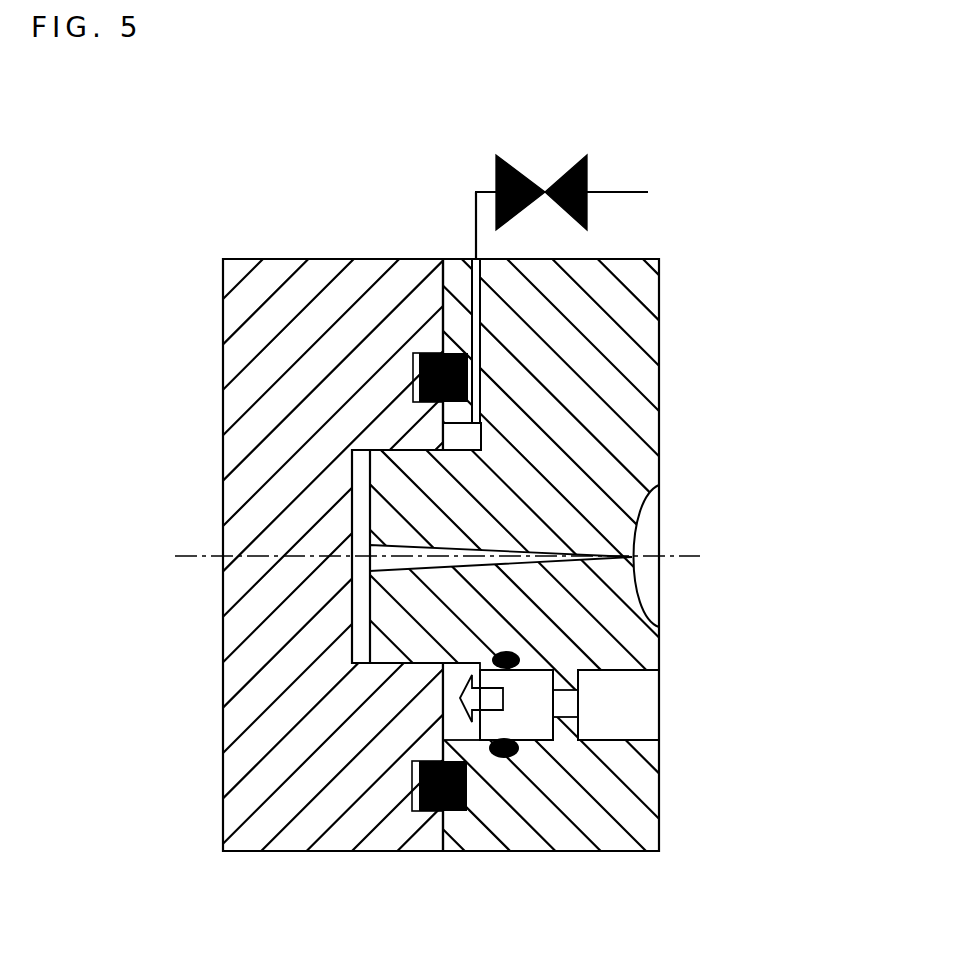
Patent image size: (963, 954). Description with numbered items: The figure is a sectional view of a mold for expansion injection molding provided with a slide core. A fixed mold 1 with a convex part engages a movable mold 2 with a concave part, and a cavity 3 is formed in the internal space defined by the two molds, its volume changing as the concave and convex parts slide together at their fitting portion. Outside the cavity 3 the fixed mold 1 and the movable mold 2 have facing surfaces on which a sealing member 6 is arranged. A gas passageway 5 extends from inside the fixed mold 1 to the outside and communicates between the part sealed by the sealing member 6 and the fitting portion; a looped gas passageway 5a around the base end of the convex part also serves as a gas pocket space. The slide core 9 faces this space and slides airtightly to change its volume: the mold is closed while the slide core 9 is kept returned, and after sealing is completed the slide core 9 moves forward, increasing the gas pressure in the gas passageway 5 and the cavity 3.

The fixed mold 1 is at (628, 350).
The movable mold 2 is at (323, 317).
The cavity 3 is at (362, 607).
The gas passageway 5 is at (483, 312).
The looped gas passageway 5a is at (462, 438).
The sealing member 6 is at (410, 347).
The slide core 9 is at (525, 718).